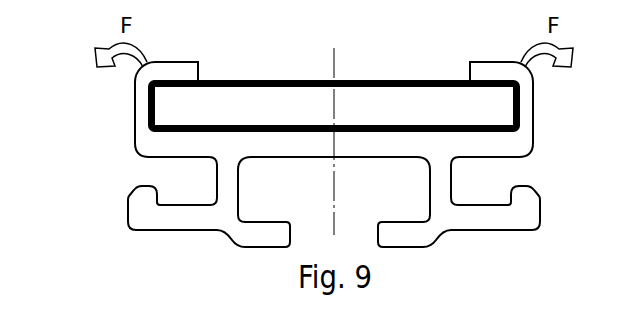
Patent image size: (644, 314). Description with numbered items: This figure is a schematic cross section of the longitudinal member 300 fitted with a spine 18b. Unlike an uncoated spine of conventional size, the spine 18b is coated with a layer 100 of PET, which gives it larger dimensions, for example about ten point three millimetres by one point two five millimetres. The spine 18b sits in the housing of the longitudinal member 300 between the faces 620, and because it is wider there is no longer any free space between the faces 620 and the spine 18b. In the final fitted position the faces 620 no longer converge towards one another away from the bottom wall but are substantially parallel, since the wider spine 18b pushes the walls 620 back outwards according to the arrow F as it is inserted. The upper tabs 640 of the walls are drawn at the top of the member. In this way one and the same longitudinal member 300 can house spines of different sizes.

The layer of PET 100 is at (280, 90).
The spine 18b is at (273, 100).
The longitudinal member 300 is at (547, 114).
The faces 620 is at (143, 97).
The latching tab 640 is at (179, 71).